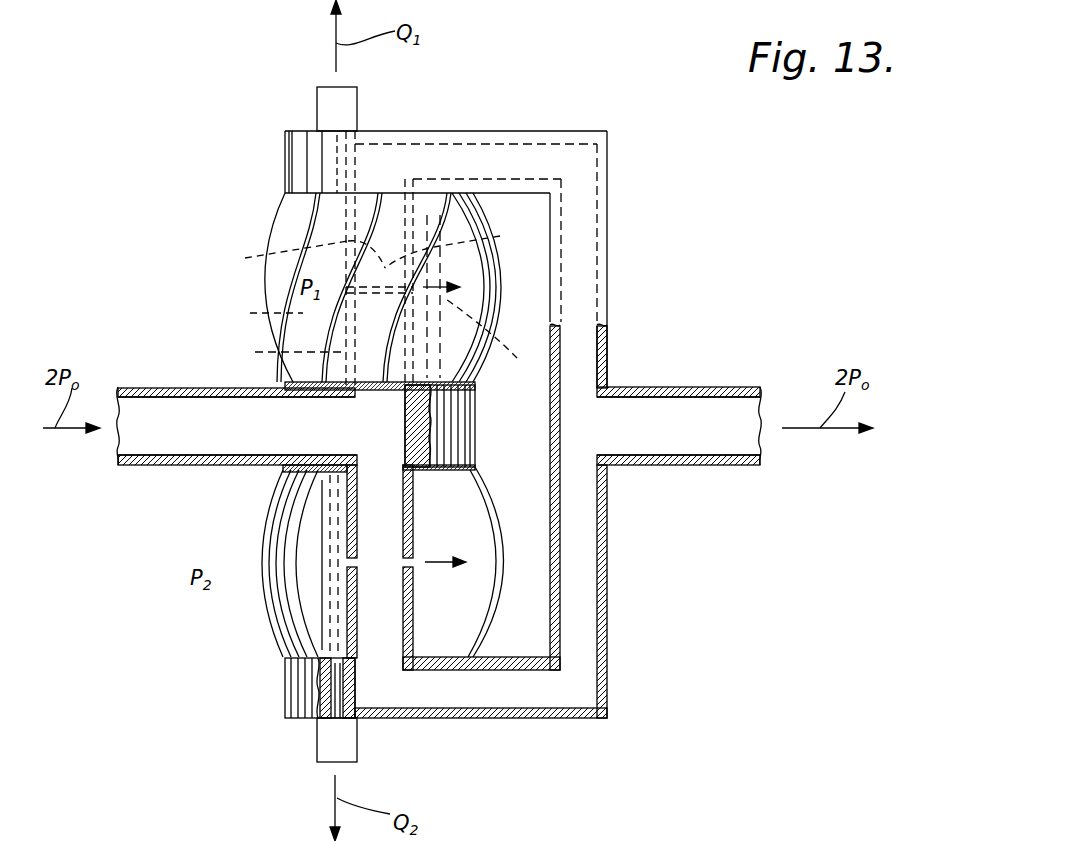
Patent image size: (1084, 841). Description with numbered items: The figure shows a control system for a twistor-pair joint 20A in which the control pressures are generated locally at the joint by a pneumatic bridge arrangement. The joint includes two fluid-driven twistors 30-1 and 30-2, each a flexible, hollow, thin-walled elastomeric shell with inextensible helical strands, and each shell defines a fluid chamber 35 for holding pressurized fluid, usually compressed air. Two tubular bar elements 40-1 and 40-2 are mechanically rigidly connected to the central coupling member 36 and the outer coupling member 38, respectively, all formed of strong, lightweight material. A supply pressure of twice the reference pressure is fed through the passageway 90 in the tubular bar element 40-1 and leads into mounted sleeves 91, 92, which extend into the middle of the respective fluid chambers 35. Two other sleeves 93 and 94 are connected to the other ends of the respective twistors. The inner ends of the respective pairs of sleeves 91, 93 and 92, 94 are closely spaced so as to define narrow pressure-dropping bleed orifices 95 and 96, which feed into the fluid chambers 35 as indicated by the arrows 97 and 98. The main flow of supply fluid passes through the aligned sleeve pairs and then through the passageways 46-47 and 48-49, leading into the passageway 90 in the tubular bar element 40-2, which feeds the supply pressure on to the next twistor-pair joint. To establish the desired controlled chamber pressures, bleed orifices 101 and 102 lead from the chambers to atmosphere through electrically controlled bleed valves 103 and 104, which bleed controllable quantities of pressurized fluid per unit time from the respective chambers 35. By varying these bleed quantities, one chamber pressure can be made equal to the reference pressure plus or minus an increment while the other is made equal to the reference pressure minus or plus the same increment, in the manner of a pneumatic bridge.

The twistor-pair joint 20A is at (670, 182).
The fluid-driven twistor 30-1 is at (262, 220).
The fluid-driven twistor 30-2 is at (248, 612).
The fluid chamber 35 is at (303, 320).
The central coupling member 36 is at (487, 420).
The outer coupling member 38 is at (618, 259).
The tubular bar element 40-1 is at (160, 470).
The tubular bar element 40-2 is at (712, 477).
The passageway 46 is at (525, 152).
The passageway 47 is at (580, 362).
The passageway 48 is at (490, 690).
The passageway 49 is at (580, 626).
The passageway 90 is at (168, 416).
The sleeve 91 is at (282, 351).
The sleeve 92 is at (346, 528).
The sleeve 93 is at (294, 258).
The sleeve 94 is at (346, 613).
The bleed orifice 95 is at (458, 250).
The bleed orifice 96 is at (418, 562).
The arrow 97 is at (476, 332).
The arrow 98 is at (445, 552).
The bleed orifice 101 is at (330, 158).
The bleed orifice 102 is at (335, 697).
The electrically controlled bleed valve 103 is at (316, 102).
The electrically controlled bleed valve 104 is at (315, 748).